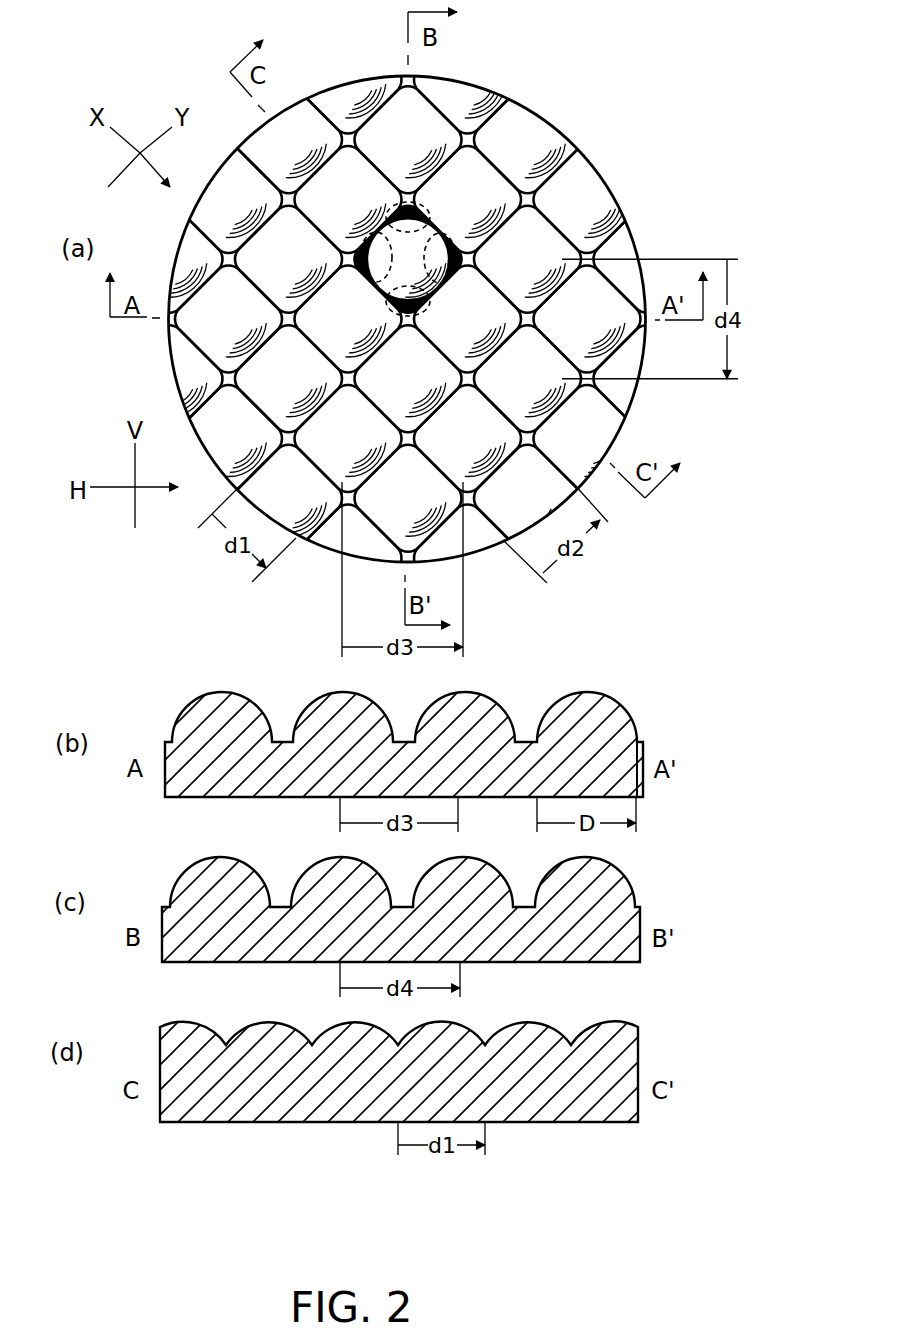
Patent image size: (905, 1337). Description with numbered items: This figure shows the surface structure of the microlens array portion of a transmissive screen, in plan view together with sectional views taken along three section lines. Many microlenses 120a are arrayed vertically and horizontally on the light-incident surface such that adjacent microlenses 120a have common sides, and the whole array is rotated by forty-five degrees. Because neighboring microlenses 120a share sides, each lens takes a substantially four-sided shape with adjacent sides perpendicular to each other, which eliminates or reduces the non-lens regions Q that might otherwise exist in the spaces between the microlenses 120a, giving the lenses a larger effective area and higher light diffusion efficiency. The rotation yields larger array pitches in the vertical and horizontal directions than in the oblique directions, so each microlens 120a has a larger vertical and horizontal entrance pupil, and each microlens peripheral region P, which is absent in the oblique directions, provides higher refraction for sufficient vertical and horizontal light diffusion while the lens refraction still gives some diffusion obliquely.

The microlens 120a is at (532, 132).
The non-lens region Q is at (475, 259).
The microlens peripheral region P is at (405, 250).